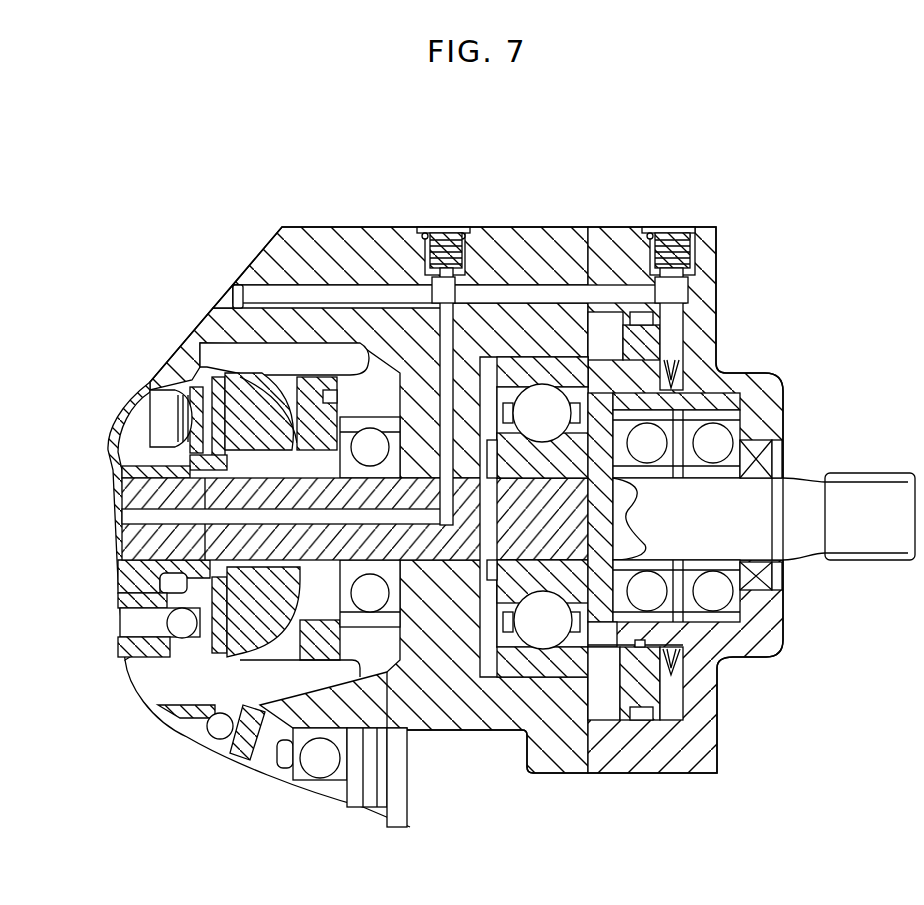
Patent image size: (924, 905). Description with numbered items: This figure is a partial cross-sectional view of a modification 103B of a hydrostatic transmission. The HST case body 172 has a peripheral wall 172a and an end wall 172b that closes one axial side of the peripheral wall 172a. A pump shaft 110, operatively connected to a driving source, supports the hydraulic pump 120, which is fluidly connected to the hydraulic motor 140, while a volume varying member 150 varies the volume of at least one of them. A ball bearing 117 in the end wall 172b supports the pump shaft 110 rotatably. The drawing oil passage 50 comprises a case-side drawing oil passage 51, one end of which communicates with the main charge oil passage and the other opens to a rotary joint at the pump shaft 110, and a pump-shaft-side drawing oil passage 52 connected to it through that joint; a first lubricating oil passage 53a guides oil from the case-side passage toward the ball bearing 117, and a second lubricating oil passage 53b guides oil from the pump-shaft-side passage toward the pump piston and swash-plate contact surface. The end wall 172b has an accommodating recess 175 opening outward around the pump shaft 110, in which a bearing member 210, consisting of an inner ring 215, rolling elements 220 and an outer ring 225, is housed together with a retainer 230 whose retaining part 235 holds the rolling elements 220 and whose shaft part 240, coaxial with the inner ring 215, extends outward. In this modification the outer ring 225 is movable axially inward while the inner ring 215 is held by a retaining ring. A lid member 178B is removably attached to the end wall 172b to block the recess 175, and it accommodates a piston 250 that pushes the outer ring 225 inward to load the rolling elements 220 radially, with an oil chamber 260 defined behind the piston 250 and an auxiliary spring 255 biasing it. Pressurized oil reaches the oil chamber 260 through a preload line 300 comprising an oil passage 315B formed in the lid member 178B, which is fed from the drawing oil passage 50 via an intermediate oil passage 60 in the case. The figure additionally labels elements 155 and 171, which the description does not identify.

The drawing oil passage 50 is at (225, 290).
The case-side drawing oil passage 51 is at (312, 292).
The pump-shaft-side drawing oil passage 52 is at (321, 518).
The first lubricating oil passage 53a is at (363, 350).
The second lubricating oil passage 53b is at (190, 492).
The intermediate oil passage 60 is at (537, 283).
The modification 103B is at (770, 186).
The pump shaft 110 is at (557, 520).
The ball bearing 117 is at (388, 800).
The hydraulic pump 120 is at (110, 403).
The hydraulic motor 140 is at (183, 731).
The volume varying member 150 is at (208, 369).
The roller bearing 155 is at (238, 760).
The housing body 171 is at (468, 200).
The HST case body 172 is at (283, 224).
The peripheral wall 172a is at (408, 258).
The end wall 172b is at (557, 317).
The accommodating recess 175 is at (479, 328).
The lid member 178B is at (820, 348).
The bearing member 210 is at (560, 713).
The inner ring 215 is at (497, 600).
The rolling elements 220 is at (540, 628).
The outer ring 225 is at (550, 655).
The retainer 230 is at (755, 636).
The retaining part 235 is at (640, 700).
The shaft part 240 is at (740, 543).
The piston 250 is at (643, 703).
The auxiliary spring 255 is at (683, 667).
The oil chamber 260 is at (677, 695).
The preload line 300 is at (672, 250).
The oil passage 315B is at (758, 308).